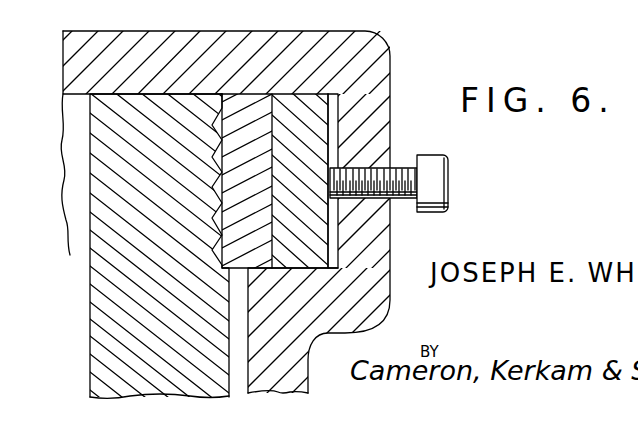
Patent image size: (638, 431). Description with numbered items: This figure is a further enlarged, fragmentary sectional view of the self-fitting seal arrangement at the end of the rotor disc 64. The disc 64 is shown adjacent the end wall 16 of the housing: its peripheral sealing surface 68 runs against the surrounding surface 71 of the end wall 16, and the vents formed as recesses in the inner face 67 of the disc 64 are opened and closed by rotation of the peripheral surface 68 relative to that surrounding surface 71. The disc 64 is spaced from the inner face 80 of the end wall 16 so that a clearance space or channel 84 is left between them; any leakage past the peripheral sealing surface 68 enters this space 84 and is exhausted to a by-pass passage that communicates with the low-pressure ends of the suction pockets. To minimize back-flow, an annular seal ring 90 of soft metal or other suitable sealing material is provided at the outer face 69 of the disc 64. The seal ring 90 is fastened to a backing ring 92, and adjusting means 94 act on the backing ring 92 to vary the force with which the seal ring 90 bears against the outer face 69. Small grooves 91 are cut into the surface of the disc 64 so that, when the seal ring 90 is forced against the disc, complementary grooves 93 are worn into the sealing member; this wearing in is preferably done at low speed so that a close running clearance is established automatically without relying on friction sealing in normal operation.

The end wall 16 is at (392, 66).
The disc 64 is at (150, 311).
The inner face 67 is at (90, 366).
The peripheral surface 68 is at (183, 93).
The outer face 69 is at (233, 372).
The surrounding surface 71 is at (85, 98).
The inner face 80 is at (243, 322).
The clearance space 84 is at (240, 356).
The seal ring 90 is at (252, 107).
The grooves 91 is at (215, 250).
The backing ring 92 is at (318, 241).
The complementary grooves 93 is at (225, 240).
The adjusting means 94 is at (434, 180).